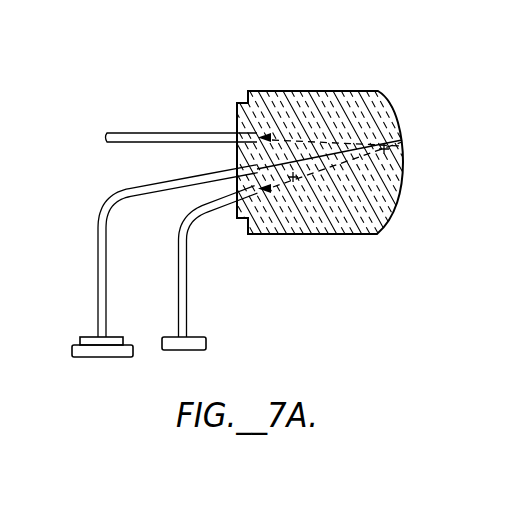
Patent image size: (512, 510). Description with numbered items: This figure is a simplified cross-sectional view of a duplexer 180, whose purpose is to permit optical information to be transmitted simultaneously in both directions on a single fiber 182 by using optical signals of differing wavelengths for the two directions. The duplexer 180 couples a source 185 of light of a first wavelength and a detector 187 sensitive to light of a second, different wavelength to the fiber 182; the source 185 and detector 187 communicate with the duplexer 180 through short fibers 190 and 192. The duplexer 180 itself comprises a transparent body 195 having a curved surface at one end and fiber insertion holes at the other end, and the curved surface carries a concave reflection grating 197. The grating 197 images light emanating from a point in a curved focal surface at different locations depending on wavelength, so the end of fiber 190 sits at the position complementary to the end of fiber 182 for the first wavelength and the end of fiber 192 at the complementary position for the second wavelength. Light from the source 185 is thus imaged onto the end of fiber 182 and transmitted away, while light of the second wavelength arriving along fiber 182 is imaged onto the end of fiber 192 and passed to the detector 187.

The duplexer 180 is at (321, 153).
The fiber 182 is at (143, 131).
The source 185 is at (98, 357).
The detector 187 is at (190, 350).
The short fiber 190 is at (107, 249).
The short fiber 192 is at (187, 265).
The transparent body 195 is at (308, 234).
The concave reflection grating 197 is at (401, 152).